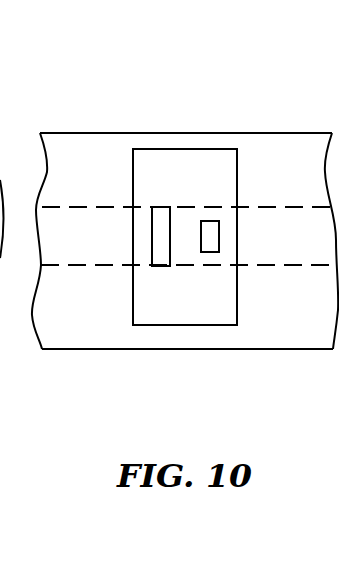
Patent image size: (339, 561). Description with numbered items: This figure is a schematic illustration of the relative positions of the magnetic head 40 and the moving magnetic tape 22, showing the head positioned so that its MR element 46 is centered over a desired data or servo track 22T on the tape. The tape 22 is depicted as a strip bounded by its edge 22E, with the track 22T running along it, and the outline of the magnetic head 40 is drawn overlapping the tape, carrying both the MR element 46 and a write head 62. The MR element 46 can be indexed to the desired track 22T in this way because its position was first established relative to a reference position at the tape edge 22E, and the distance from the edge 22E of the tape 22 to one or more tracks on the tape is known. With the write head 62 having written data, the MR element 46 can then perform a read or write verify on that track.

The magnetic tape 22 is at (98, 190).
The data or servo track 22T is at (53, 220).
The edge of the magnetic tape 22E is at (205, 350).
The magnetic head 40 is at (133, 285).
The write head 62 is at (162, 255).
The MR element 46 is at (212, 242).